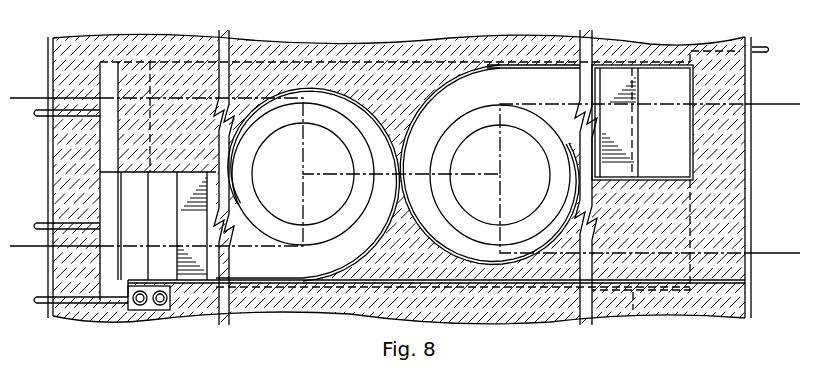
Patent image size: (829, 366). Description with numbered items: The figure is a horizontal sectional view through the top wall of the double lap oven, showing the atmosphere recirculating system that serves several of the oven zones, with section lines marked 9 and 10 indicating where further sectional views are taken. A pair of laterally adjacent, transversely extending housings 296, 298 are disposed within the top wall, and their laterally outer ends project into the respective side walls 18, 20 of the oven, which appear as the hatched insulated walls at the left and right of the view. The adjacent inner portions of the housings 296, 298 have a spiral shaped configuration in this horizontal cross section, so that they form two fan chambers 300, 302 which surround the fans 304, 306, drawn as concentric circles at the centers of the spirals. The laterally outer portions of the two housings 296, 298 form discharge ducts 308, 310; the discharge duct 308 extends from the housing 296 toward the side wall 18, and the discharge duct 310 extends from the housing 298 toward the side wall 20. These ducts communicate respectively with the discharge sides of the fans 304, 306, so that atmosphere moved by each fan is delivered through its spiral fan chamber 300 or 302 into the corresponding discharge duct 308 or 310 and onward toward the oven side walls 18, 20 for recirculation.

The side wall 18 is at (48, 155).
The side wall 20 is at (754, 191).
The housing 296 is at (281, 266).
The housing 298 is at (542, 76).
The fan chamber 300 is at (362, 117).
The fan chamber 302 is at (440, 110).
The fan 304 is at (327, 117).
The fan 306 is at (482, 123).
The discharge duct 308 is at (270, 269).
The discharge duct 310 is at (523, 100).
The section line 9- 9 is at (16, 210).
The section line 10- 10 is at (18, 63).